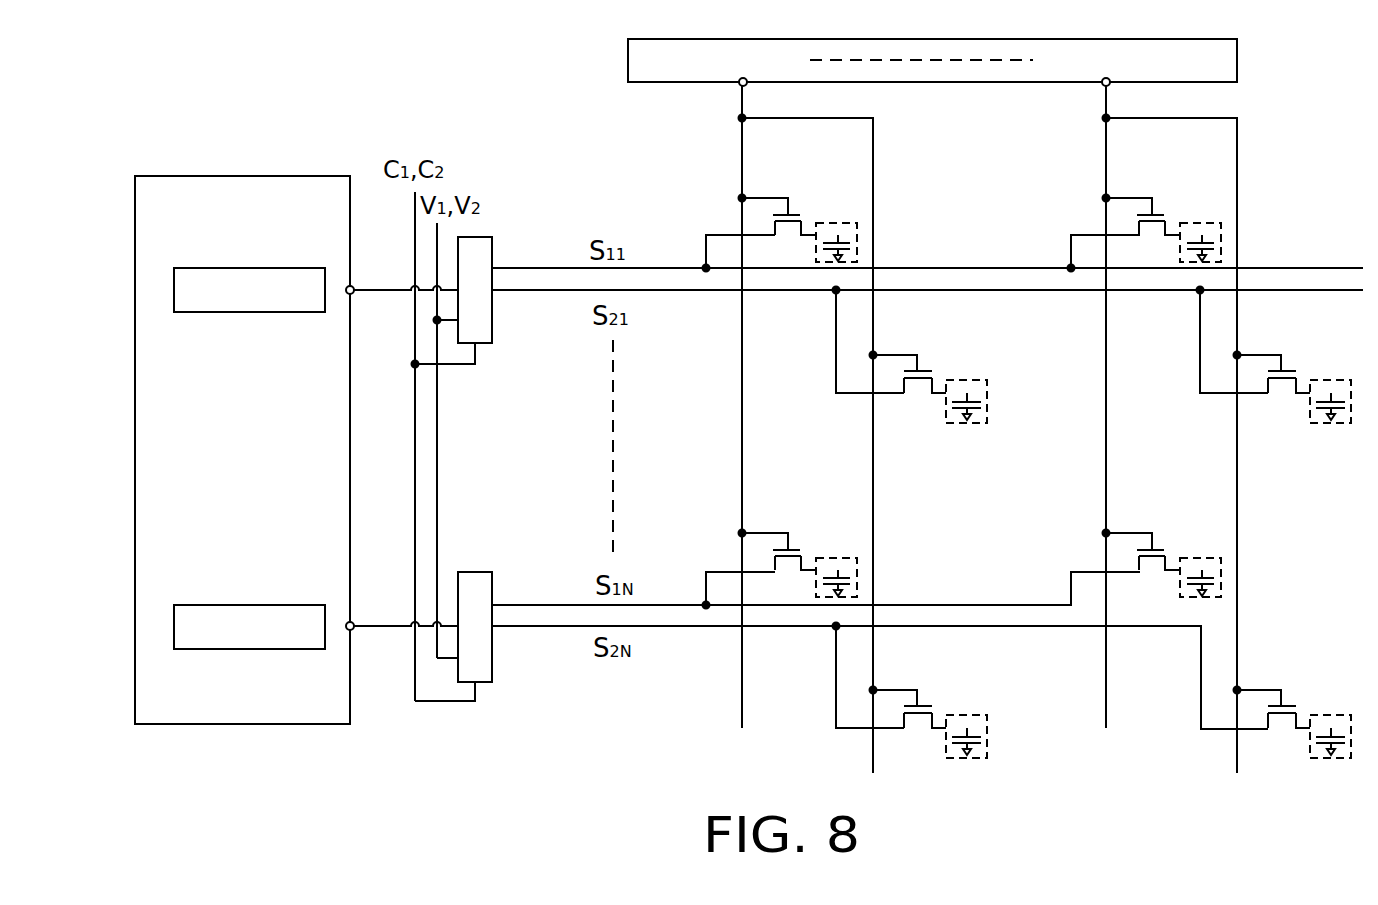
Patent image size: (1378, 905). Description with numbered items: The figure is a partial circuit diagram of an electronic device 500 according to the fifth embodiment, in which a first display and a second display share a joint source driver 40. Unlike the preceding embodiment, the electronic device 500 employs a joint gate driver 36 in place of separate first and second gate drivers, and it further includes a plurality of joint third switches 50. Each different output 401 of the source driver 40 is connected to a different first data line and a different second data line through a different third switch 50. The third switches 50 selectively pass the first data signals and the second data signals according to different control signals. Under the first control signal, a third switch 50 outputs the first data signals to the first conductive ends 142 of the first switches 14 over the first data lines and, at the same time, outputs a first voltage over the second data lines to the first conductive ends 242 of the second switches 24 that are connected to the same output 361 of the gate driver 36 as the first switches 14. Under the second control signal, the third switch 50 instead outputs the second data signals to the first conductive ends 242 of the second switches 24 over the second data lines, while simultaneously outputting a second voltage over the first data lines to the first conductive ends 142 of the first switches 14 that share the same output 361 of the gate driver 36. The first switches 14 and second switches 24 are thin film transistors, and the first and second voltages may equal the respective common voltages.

The electronic device 500 is at (429, 66).
The joint source driver 40 is at (230, 176).
The output 401 is at (353, 630).
The third switch 50 is at (483, 344).
The joint gate driver 36 is at (905, 39).
The output 361 is at (739, 87).
The first conductive end 142 is at (720, 234).
The first switch 14 is at (980, 399).
The second conductive end 242 is at (858, 395).
The second switch 24 is at (1111, 559).